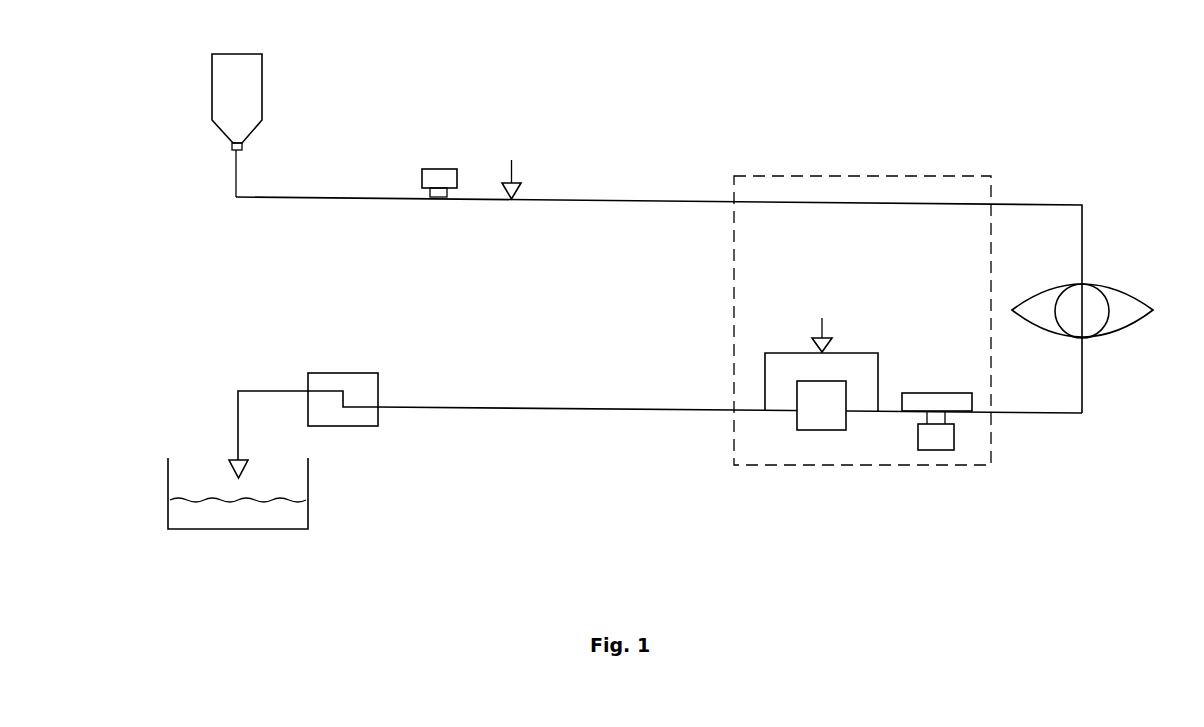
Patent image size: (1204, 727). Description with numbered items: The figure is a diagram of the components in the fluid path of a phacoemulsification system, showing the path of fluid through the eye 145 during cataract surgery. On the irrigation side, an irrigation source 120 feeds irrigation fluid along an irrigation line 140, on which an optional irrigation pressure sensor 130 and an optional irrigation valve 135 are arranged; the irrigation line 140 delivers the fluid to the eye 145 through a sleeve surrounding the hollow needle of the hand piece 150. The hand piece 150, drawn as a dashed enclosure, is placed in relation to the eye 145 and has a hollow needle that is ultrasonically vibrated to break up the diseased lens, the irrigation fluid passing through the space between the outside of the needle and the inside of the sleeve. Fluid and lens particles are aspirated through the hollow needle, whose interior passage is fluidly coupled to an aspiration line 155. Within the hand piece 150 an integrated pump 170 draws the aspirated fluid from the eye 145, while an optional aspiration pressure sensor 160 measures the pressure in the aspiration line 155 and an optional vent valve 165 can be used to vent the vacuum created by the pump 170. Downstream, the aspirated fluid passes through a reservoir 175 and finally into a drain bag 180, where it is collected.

The irrigation source 120 is at (274, 97).
The irrigation pressure sensor 130 is at (447, 155).
The irrigation valve 135 is at (523, 162).
The irrigation line 140 is at (636, 187).
The eye 145 is at (1121, 279).
The hand piece 150 is at (871, 162).
The aspiration line 155 is at (542, 422).
The aspiration pressure sensor 160 is at (966, 459).
The vent valve 165 is at (834, 308).
The pump 170 is at (827, 443).
The reservoir 175 is at (364, 359).
The drain bag 180 is at (321, 522).